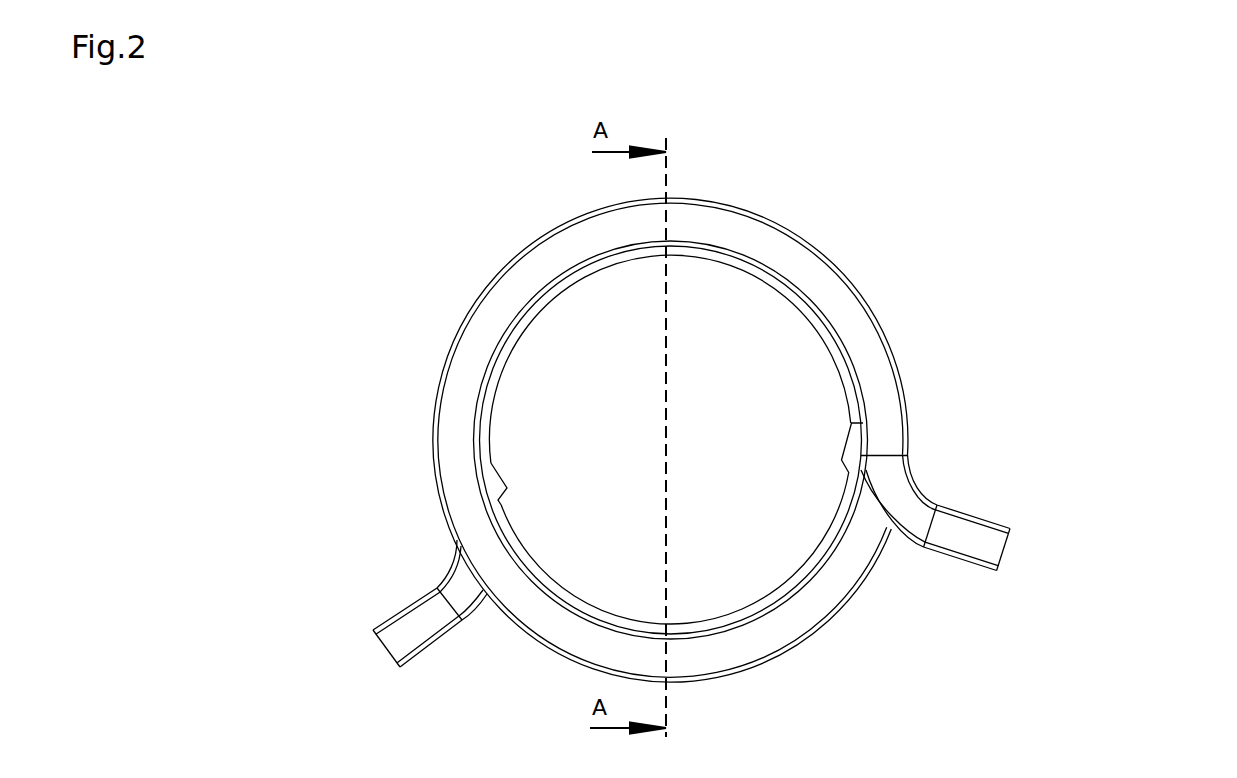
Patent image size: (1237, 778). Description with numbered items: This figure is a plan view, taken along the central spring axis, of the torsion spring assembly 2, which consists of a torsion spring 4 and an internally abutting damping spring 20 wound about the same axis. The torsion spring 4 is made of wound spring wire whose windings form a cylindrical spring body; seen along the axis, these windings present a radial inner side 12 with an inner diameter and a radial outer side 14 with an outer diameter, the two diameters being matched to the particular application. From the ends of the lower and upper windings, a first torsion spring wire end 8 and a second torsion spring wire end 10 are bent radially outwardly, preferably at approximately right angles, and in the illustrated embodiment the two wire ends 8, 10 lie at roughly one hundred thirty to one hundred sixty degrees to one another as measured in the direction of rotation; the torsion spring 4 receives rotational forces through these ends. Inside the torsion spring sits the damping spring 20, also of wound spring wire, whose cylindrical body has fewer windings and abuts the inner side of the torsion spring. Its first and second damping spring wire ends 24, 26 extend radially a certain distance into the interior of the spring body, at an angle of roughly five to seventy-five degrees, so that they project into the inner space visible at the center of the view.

The torsion spring assembly 2 is at (392, 190).
The torsion spring 4 is at (727, 227).
The first torsion spring wire end 8 is at (422, 617).
The second torsion spring wire end 10 is at (965, 533).
The radial inner side 12 is at (513, 337).
The radial outer side 14 is at (845, 269).
The damping spring 20 is at (827, 545).
The first damping spring wire end 24 is at (852, 450).
The second damping spring wire end 26 is at (505, 486).